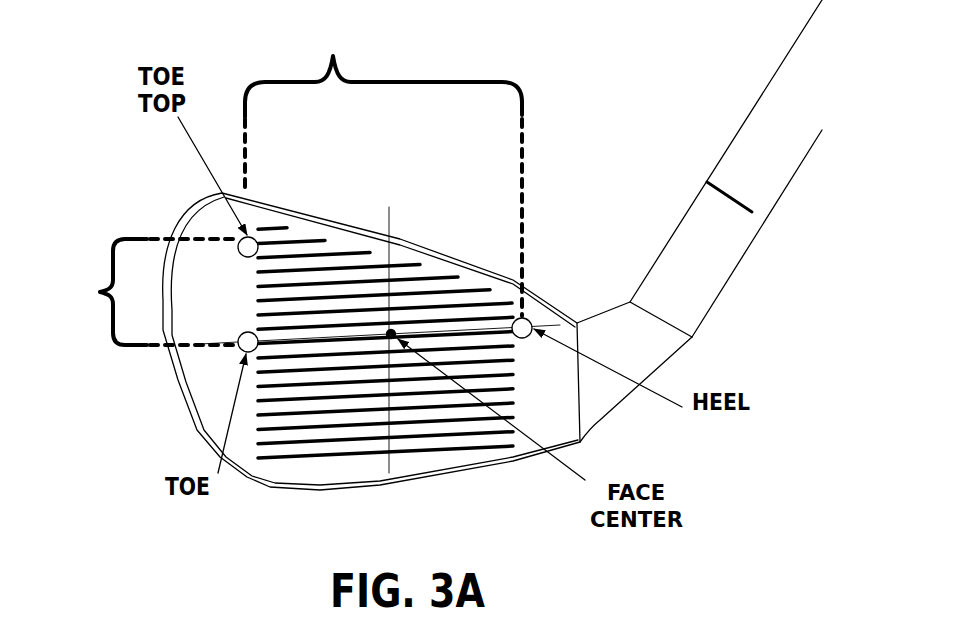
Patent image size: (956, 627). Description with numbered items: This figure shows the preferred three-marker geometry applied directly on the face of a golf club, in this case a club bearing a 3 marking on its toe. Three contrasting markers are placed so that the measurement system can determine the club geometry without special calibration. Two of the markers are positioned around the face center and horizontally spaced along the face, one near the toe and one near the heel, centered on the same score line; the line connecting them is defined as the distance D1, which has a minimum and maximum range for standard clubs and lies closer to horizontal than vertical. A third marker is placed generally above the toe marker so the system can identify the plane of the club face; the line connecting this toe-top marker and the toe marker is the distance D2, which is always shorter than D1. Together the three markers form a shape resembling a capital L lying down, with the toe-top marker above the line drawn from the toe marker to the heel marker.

The iron club head (3-iron marking) 3 is at (492, 245).
The distance D1 is at (383, 170).
The distance D2 is at (127, 292).